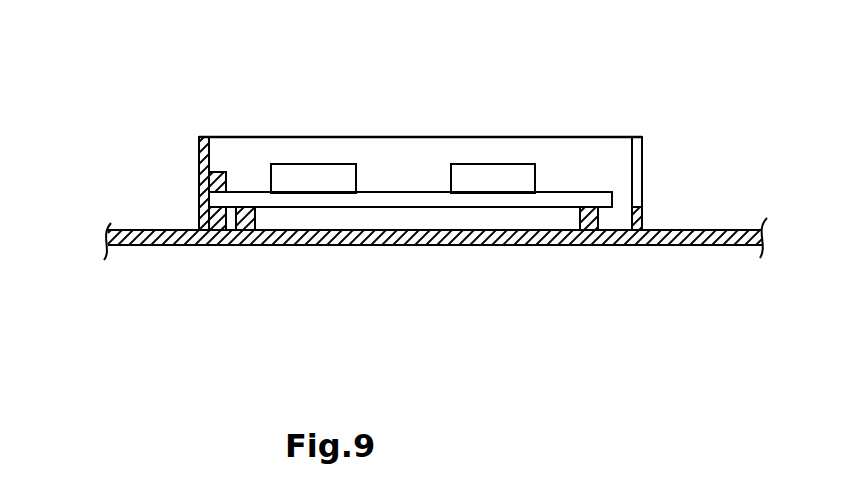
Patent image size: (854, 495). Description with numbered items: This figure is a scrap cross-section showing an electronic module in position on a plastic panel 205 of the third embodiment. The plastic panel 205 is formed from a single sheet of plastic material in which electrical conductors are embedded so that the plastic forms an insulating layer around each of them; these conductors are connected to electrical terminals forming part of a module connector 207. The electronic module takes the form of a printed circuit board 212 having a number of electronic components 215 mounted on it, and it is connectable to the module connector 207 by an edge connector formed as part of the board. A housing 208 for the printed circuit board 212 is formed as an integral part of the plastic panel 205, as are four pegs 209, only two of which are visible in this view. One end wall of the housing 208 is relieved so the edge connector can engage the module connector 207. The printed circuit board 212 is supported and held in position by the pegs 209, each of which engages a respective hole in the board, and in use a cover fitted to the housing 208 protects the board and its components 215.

The plastic panel 205 is at (132, 251).
The module connector 207 is at (218, 172).
The housing 208 is at (199, 148).
The pegs 209 is at (256, 214).
The printed circuit board 212 is at (393, 197).
The electronic components 215 is at (303, 164).